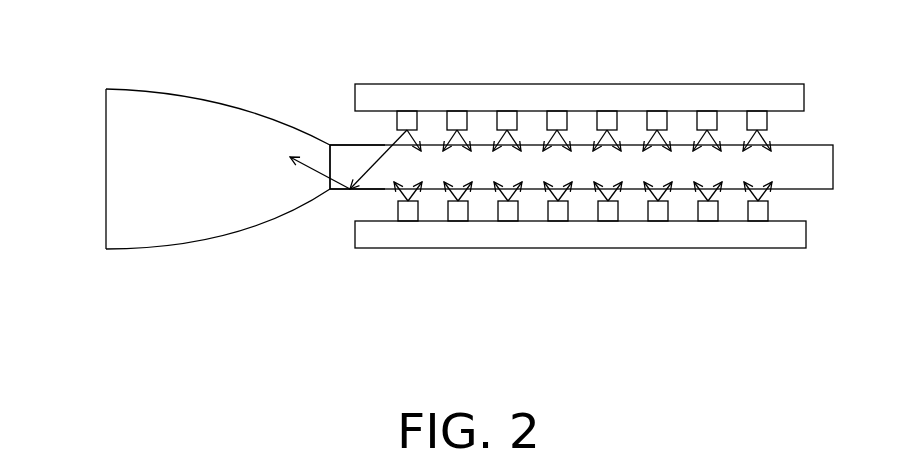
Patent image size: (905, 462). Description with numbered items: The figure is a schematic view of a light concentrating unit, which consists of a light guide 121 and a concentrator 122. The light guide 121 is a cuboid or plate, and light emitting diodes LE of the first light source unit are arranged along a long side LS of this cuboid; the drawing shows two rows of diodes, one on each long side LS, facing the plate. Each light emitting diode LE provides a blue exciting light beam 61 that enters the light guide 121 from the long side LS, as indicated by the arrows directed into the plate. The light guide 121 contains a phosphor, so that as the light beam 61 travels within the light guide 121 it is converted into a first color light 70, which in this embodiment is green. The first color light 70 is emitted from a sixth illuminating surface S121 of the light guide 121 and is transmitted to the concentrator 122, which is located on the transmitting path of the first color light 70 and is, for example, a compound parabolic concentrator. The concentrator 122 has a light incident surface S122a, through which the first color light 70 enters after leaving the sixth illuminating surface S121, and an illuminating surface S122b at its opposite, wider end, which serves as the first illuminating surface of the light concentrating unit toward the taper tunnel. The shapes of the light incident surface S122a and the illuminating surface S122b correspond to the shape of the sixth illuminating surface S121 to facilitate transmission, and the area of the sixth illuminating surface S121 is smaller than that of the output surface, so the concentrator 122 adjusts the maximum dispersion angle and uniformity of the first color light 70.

The light beam 61 is at (360, 176).
The first color light 70 is at (307, 170).
The light guide 121 is at (334, 192).
The concentrator 122 is at (173, 108).
The sixth illuminating surface S121 is at (330, 146).
The light incident surface S122a is at (338, 162).
The illuminating surface S122b is at (104, 107).
The long side LS is at (791, 140).
The light emitting diode LE is at (708, 212).